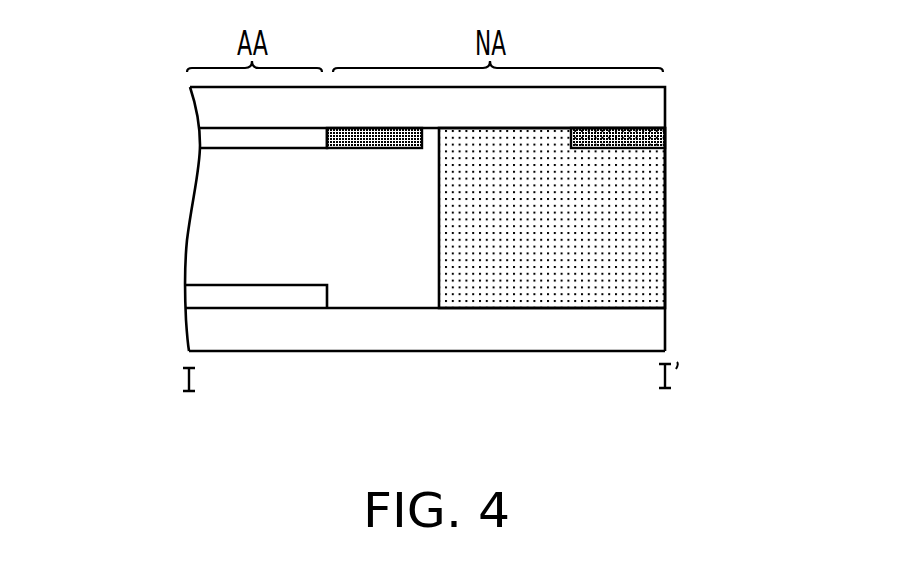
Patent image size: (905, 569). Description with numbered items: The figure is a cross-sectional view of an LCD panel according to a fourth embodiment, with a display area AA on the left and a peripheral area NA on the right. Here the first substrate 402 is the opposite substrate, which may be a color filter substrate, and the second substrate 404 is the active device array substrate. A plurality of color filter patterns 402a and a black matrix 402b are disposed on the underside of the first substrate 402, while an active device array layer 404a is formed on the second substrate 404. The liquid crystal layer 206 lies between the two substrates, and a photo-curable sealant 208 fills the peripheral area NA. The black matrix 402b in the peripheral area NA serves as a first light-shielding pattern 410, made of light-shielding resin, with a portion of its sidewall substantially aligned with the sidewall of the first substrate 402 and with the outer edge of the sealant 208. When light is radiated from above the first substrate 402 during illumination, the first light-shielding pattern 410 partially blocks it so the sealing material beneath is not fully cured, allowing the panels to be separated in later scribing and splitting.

The first substrate 402 is at (653, 108).
The color filter patterns 402a is at (203, 140).
The black matrix 402b is at (340, 148).
The first light-shielding pattern 410 is at (665, 136).
The liquid crystal layer 206 is at (203, 235).
The photo-curable sealant 208 is at (653, 243).
The second substrate 404 is at (655, 333).
The active device array layer 404a is at (193, 295).